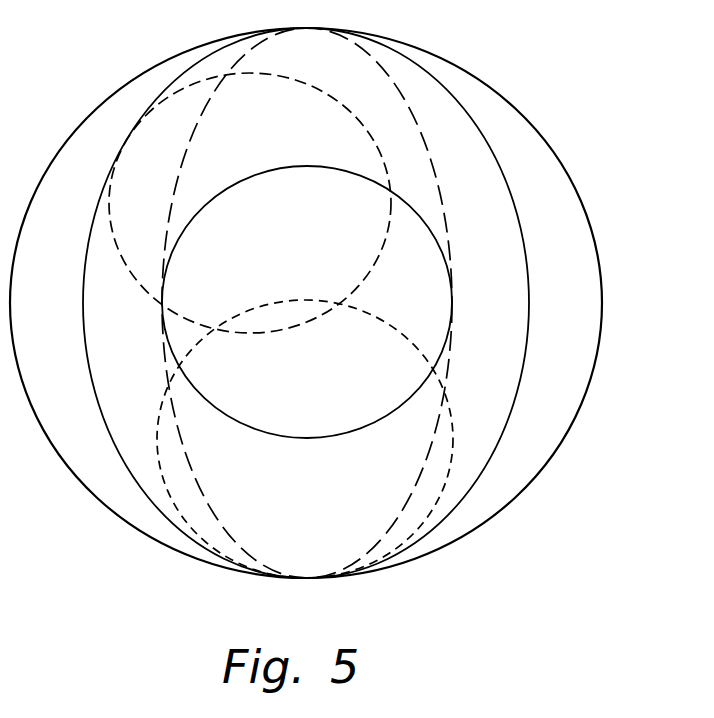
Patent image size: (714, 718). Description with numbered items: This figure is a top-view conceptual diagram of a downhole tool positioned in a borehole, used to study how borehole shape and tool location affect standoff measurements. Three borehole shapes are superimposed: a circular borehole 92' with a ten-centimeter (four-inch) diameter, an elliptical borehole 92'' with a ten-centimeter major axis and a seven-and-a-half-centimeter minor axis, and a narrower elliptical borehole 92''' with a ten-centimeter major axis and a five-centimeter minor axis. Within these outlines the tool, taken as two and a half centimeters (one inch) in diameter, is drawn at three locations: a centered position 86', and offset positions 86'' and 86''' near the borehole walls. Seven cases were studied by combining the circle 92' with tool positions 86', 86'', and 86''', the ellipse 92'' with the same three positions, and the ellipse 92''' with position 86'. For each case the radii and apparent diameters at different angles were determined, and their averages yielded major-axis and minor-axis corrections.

The borehole 92' is at (340, 303).
The borehole 92'' is at (335, 303).
The borehole 92''' is at (307, 303).
The downhole tool 86' is at (307, 302).
The downhole tool 86'' is at (305, 439).
The downhole tool 86''' is at (250, 203).